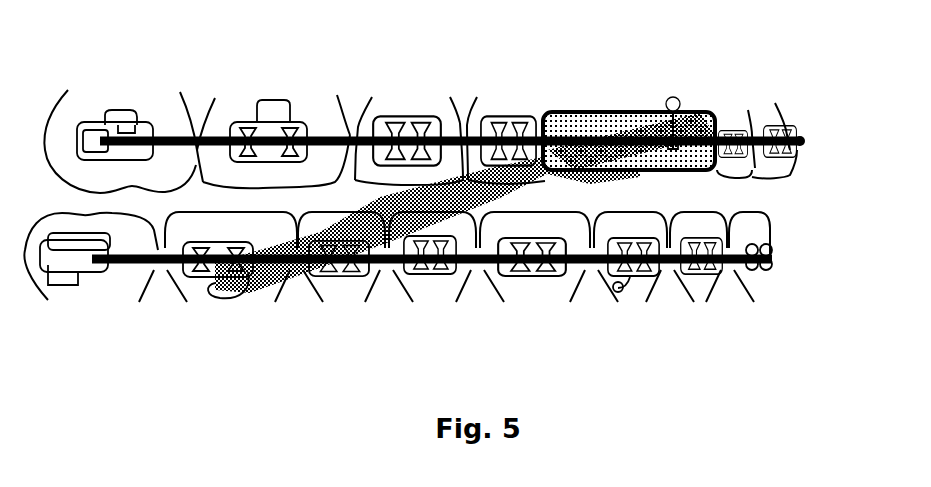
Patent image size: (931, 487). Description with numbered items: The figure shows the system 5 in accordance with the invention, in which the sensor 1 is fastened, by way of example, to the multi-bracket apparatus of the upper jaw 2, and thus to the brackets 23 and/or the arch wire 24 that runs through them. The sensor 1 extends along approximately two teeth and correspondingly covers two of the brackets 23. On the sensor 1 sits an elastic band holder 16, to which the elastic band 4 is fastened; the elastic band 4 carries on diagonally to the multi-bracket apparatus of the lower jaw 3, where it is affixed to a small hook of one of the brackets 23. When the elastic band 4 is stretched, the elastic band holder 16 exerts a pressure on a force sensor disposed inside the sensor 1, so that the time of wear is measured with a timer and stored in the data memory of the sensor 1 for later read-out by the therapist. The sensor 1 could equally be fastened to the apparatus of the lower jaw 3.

The sensor 1 is at (606, 125).
The upper jaw 2 is at (801, 123).
The lower jaw 3 is at (786, 265).
The elastic band 4 is at (582, 148).
The system 5 is at (712, 311).
The elastic band holder 16 is at (679, 99).
The brackets 23 is at (407, 122).
The arch wire 24 is at (166, 138).